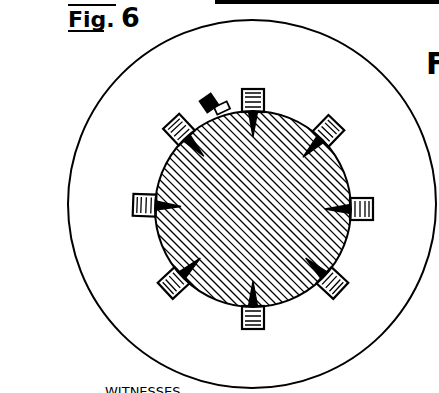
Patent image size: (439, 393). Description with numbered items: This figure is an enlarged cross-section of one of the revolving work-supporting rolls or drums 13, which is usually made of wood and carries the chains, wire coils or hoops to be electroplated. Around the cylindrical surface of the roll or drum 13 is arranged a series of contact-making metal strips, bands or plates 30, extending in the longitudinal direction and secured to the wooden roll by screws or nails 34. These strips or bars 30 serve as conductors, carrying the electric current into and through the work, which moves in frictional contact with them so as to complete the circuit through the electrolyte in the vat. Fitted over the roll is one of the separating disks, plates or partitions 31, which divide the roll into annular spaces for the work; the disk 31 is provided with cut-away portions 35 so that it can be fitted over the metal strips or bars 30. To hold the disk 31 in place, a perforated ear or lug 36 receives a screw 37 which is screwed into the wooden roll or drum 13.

The work-supporting roll or drum 13 is at (318, 175).
The metal strips, bands or plates 30 is at (325, 124).
The separating disks, plates or partitions 31 is at (327, 48).
The screws or nails 34 is at (259, 87).
The cut-away portions 35 is at (268, 88).
The perforated ears or lugs 36 is at (224, 104).
The screws 37 is at (207, 98).